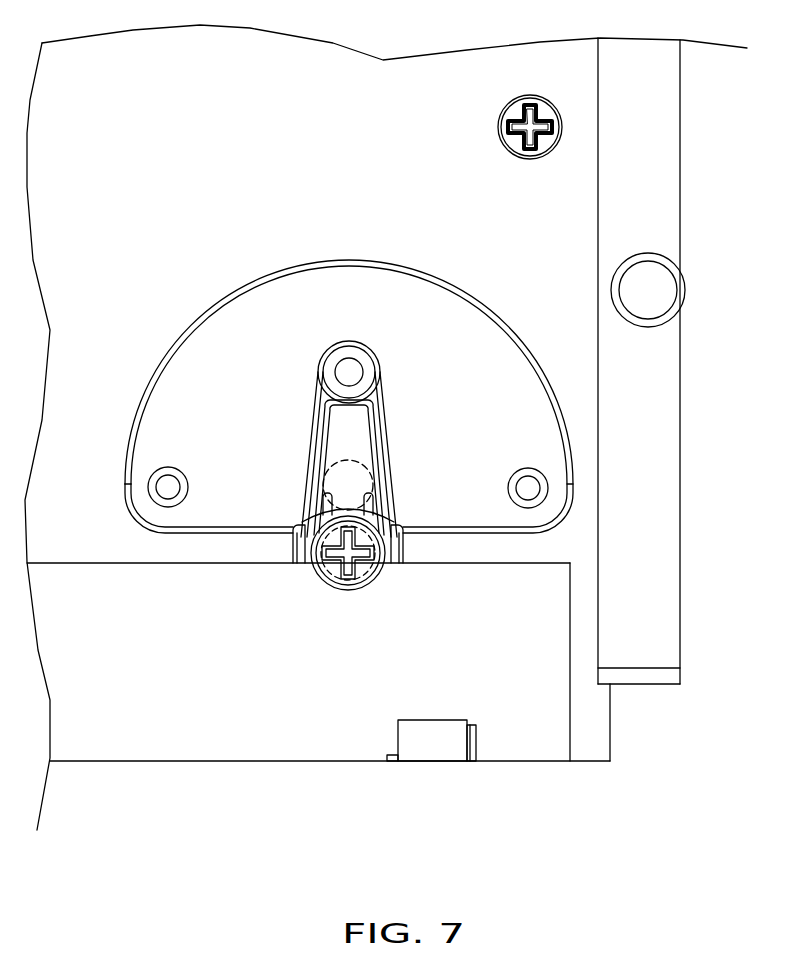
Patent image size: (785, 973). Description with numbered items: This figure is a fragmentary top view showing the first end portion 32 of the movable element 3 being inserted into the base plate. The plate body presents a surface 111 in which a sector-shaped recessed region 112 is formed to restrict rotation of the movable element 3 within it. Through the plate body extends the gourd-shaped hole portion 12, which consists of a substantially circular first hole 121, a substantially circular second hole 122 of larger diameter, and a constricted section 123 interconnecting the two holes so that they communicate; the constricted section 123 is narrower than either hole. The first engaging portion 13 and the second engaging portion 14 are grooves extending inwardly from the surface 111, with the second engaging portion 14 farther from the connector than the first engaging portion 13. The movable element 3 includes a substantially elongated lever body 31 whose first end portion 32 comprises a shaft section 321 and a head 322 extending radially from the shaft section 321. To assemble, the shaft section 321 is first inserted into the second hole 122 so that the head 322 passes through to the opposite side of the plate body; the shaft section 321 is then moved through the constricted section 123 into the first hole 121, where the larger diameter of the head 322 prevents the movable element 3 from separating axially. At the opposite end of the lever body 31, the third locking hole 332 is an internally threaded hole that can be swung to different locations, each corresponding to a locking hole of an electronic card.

The surface 111 is at (565, 178).
The sector-shaped recessed region 112 is at (224, 357).
The hole portion 12 is at (340, 460).
The first hole 121 is at (353, 462).
The second hole 122 is at (332, 588).
The constricted section 123 is at (371, 513).
The first engaging portion 13 is at (168, 467).
The second engaging portion 14 is at (529, 468).
The movable element 3 is at (394, 466).
The lever body 31 is at (383, 418).
The first end portion 32 is at (373, 579).
The shaft section 321 is at (385, 568).
The head 322 is at (365, 592).
The third locking hole 332 is at (347, 358).